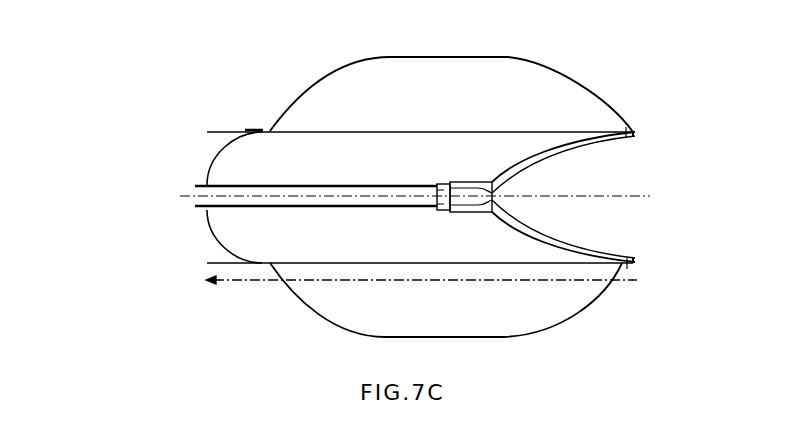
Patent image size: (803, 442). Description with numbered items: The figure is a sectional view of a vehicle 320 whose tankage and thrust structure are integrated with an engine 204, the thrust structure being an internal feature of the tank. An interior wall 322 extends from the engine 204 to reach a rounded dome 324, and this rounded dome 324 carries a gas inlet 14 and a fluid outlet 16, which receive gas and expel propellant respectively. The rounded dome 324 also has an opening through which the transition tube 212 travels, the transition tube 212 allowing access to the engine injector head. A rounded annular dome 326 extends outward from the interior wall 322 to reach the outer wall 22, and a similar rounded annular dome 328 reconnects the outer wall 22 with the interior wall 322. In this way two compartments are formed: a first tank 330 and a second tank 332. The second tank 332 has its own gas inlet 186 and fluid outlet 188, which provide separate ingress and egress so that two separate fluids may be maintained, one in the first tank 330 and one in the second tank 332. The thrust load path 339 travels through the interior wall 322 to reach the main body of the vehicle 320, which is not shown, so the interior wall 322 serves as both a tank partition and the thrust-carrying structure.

The vehicle 320 is at (158, 88).
The outer wall 22 is at (452, 57).
The second tank 332 is at (343, 88).
The rounded annular dome 326 is at (580, 84).
The interior wall 322 is at (438, 131).
The gas inlet 186 is at (240, 128).
The rounded dome 324 is at (212, 165).
The gas inlet 14 is at (192, 184).
The fluid outlet 16 is at (192, 207).
The transition tube 212 is at (326, 185).
The engine 204 is at (538, 157).
The first tank 330 is at (240, 232).
The fluid outlet 188 is at (243, 266).
The rounded annular dome 328 is at (320, 315).
The thrust load path 339 is at (402, 280).